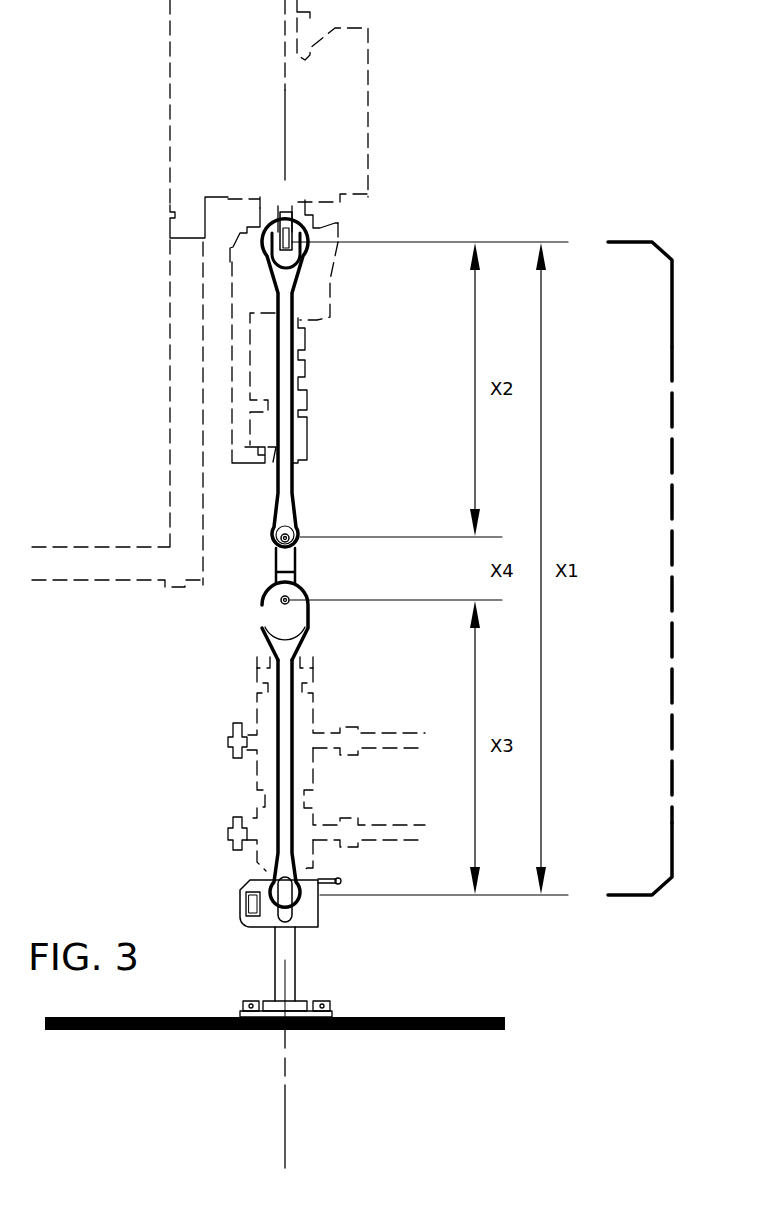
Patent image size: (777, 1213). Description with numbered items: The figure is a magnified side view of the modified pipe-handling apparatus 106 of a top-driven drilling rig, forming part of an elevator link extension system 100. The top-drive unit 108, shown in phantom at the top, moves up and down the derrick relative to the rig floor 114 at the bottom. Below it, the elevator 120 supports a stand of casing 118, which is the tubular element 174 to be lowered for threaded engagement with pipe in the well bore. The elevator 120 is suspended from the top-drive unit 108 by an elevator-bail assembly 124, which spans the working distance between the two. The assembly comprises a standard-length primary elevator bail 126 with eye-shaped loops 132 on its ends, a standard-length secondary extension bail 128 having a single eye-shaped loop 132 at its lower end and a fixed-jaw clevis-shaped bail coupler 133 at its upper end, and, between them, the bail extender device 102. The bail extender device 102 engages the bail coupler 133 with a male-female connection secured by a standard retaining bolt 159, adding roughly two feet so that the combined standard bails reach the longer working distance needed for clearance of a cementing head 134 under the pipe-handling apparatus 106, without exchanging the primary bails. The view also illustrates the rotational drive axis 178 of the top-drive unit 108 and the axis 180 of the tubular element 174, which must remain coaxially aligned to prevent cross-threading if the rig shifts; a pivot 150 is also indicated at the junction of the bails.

The elevator link extension system 100 is at (233, 595).
The bail extender device 102 is at (323, 562).
The pipe-handling apparatus 106 is at (310, 393).
The top-drive unit 108 is at (368, 88).
The rig floor 114 is at (462, 1017).
The casing 118 is at (296, 957).
The elevator 120 is at (248, 888).
The elevator-bail assembly 124 is at (672, 332).
The primary elevator bail 126 is at (323, 485).
The secondary extension bail 128 is at (274, 744).
The eye-shaped loop 132 is at (304, 275).
The bail coupler 133 is at (289, 621).
The cementing head 134 is at (313, 700).
The pivot bolt 150 is at (278, 530).
The retaining bolt 159 is at (283, 604).
The tubular element 174 is at (275, 957).
The rotational drive axis 178 is at (285, 107).
The axis 180 is at (285, 1115).